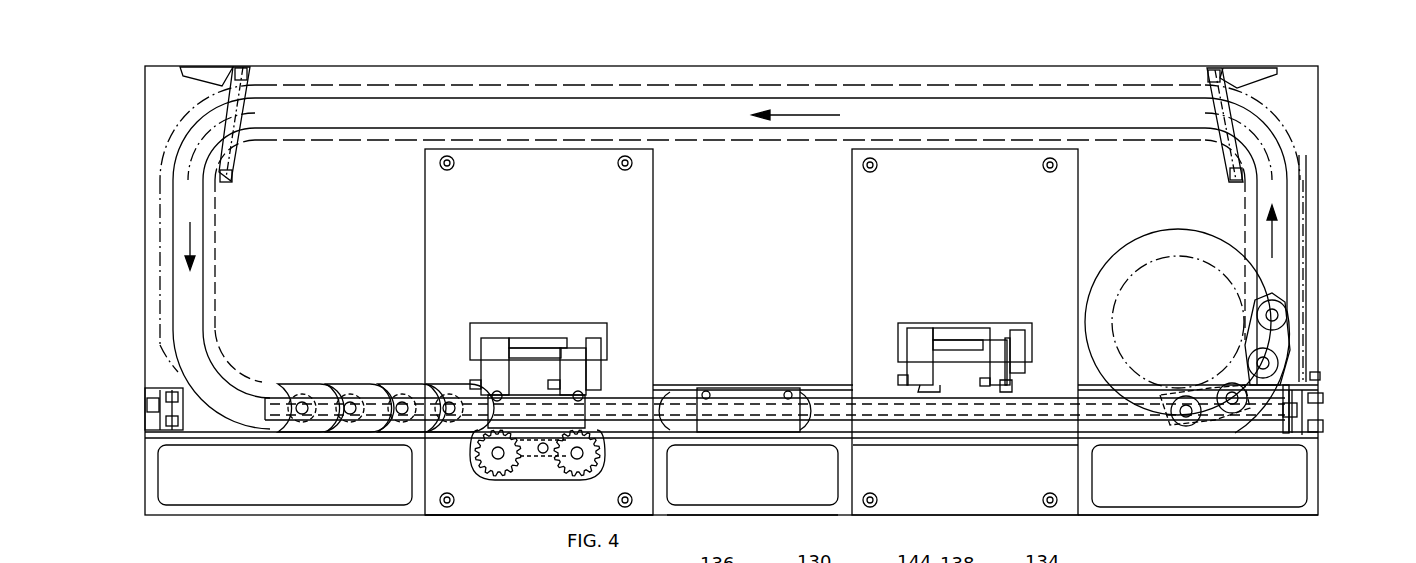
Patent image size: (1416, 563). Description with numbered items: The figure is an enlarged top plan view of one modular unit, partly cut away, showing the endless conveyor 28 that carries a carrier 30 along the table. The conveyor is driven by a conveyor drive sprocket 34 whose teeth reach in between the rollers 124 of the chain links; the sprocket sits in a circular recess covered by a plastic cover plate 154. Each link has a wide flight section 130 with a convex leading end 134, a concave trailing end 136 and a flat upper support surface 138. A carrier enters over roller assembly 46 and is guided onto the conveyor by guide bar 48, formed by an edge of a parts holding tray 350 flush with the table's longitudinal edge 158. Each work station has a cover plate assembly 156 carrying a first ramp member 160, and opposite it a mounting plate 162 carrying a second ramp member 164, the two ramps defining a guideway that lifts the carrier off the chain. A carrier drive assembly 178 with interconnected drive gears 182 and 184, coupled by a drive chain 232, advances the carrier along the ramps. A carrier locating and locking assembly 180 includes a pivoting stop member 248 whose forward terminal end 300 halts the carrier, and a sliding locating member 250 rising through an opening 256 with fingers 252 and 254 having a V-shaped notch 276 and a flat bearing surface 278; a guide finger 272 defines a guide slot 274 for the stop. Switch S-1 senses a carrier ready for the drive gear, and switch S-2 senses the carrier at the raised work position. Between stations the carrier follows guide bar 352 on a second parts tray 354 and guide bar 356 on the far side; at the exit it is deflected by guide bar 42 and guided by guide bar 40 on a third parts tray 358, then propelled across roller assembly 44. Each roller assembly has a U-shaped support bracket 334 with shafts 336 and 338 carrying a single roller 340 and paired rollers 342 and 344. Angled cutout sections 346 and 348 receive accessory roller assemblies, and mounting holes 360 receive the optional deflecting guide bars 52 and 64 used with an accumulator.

The conveyor 28 is at (299, 384).
The carrier 30 is at (492, 408).
The conveyor drive sprocket 34 is at (1258, 340).
The guide bar 40 is at (1180, 438).
The guide bar 42 is at (1310, 185).
The roller assembly 44 is at (1327, 435).
The roller assembly 46 is at (145, 410).
The guide bar 48 is at (225, 434).
The deflecting guide bar 52 is at (1205, 113).
The deflecting guide bar 64 is at (255, 113).
The roller 124 is at (1285, 312).
The flight section 130 is at (350, 384).
The leading end 134 is at (395, 386).
The trailing end 136 is at (325, 388).
The support surface 138 is at (342, 428).
The cover plate 154 is at (1175, 245).
The cover plate assembly 156 is at (527, 500).
The longitudinal edge 158 is at (1150, 515).
The first ramp member 160 is at (965, 453).
The mounting plate 162 is at (640, 220).
The second ramp member 164 is at (970, 392).
The carrier drive assembly 178 is at (548, 462).
The carrier locating and locking assembly 180 is at (543, 330).
The drive gear 182 is at (478, 462).
The drive gear 184 is at (598, 462).
The drive chain 232 is at (528, 462).
The stop member 248 is at (1012, 345).
The locating and locking member 250 is at (515, 345).
The finger 252 is at (565, 385).
The finger 254 is at (492, 355).
The opening 256 is at (480, 325).
The guide finger 272 is at (603, 372).
The guide slot 274 is at (585, 350).
The V-shaped notch 276 is at (1003, 385).
The bearing surface 278 is at (928, 382).
The forward terminal end 300 is at (590, 368).
The support bracket 334 is at (1322, 384).
The shaft 336 is at (1295, 435).
The shaft 338 is at (1324, 412).
The roller 340 is at (1285, 425).
The roller 342 is at (1324, 428).
The roller 344 is at (1325, 398).
The cutout section 346 is at (1243, 72).
The cutout section 348 is at (217, 70).
The parts holding tray 350 is at (205, 495).
The guide bar 352 is at (748, 432).
The parts tray 354 is at (733, 495).
The guide bar 356 is at (772, 385).
The parts tray 358 is at (1295, 494).
The mounting holes 360 is at (245, 70).
The S1 switch S-1 is at (472, 380).
The S2 switch S-2 is at (552, 380).